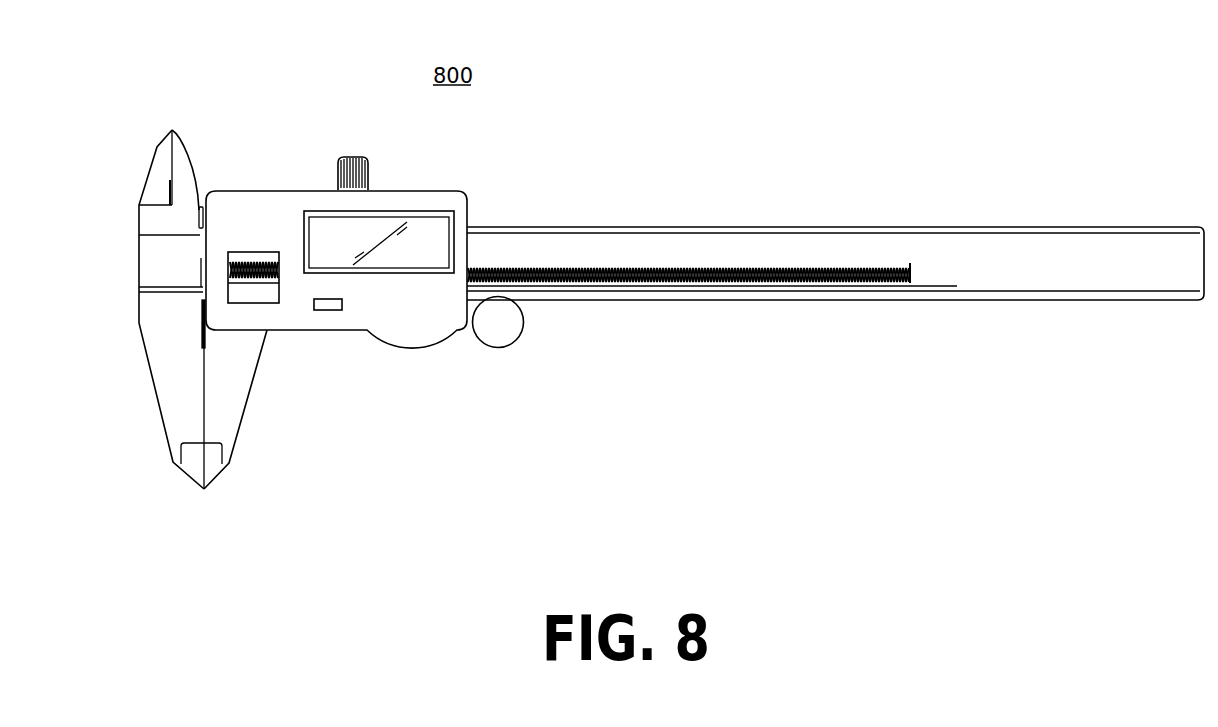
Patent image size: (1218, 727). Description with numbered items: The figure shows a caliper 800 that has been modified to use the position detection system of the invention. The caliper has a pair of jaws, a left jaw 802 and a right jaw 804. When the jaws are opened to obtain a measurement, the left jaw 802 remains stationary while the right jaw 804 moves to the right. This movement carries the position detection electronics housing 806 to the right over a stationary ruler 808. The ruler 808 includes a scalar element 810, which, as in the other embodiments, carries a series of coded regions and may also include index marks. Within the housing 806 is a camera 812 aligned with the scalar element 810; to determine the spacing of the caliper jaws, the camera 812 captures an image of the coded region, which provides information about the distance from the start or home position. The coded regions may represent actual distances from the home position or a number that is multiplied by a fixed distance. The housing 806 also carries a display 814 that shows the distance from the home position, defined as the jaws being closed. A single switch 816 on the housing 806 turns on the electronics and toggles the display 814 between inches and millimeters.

The caliper 800 is at (145, 71).
The left jaw 802 is at (176, 410).
The right jaw 804 is at (228, 433).
The position detection electronics housing 806 is at (260, 205).
The ruler 808 is at (647, 242).
The scalar element 810 is at (593, 287).
The camera 812 is at (272, 293).
The display 814 is at (427, 230).
The switch 816 is at (332, 310).